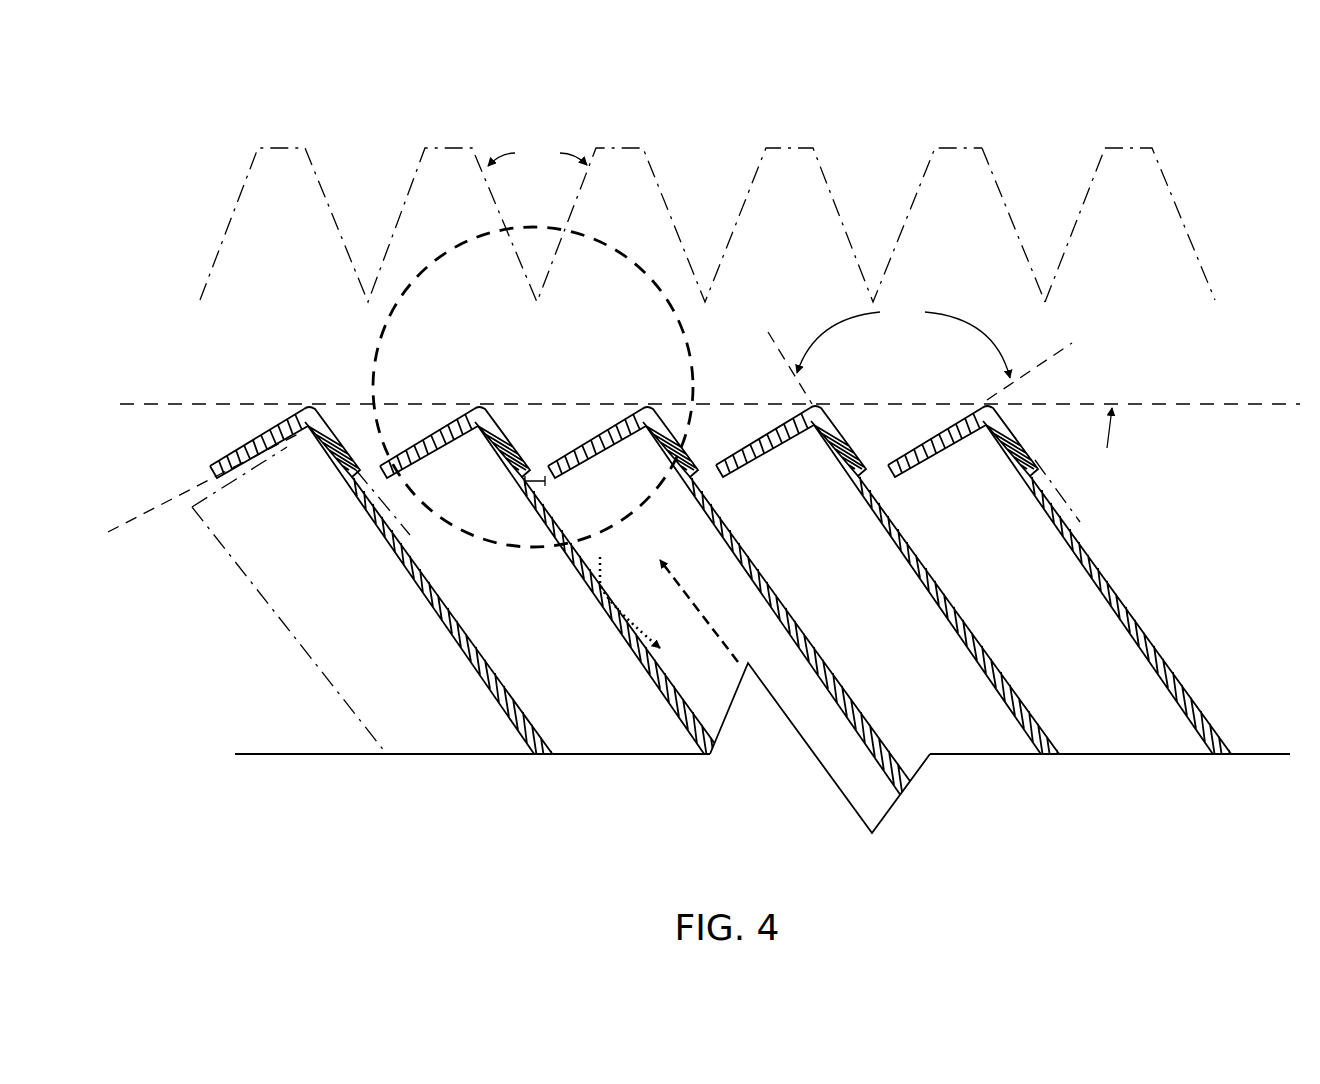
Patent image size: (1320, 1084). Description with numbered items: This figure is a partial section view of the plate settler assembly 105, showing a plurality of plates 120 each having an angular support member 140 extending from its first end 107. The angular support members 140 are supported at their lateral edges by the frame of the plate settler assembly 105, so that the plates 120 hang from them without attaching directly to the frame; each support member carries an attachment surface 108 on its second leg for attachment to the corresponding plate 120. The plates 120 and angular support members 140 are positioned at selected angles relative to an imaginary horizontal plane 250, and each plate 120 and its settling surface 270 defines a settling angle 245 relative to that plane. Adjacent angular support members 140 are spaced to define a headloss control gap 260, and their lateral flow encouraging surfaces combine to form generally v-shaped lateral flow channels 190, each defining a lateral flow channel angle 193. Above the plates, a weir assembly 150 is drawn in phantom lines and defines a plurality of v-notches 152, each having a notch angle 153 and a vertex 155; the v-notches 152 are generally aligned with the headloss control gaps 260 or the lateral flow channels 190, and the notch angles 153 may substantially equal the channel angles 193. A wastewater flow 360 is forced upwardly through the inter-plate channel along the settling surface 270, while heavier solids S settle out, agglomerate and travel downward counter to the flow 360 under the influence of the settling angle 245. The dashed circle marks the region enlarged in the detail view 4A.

The plate settler assembly 105 is at (1160, 443).
The first end 107 is at (352, 502).
The attachment surface 108 is at (330, 455).
The plate 120 is at (540, 735).
The angular support member 140 is at (739, 573).
The weir assembly 150 is at (786, 114).
The v-notch 152 is at (1002, 185).
The notch angle 153 is at (537, 155).
The vertex 155 is at (1043, 290).
The generally v-shaped lateral flow channel 190 is at (399, 432).
The lateral flow channel angle 193 is at (903, 343).
The settling angle 245 is at (1050, 507).
The imaginary horizontal plane 250 is at (1250, 405).
The headloss control gap 260 is at (543, 482).
The settling surface 270 is at (677, 686).
The wastewater flow 360 is at (700, 611).
The solids S is at (630, 602).
The detail view 4A is at (375, 332).